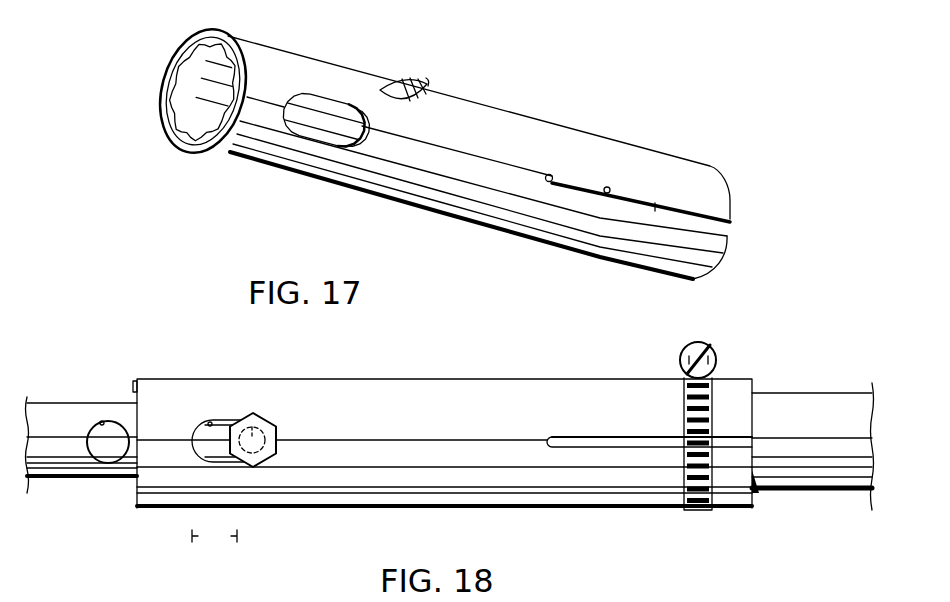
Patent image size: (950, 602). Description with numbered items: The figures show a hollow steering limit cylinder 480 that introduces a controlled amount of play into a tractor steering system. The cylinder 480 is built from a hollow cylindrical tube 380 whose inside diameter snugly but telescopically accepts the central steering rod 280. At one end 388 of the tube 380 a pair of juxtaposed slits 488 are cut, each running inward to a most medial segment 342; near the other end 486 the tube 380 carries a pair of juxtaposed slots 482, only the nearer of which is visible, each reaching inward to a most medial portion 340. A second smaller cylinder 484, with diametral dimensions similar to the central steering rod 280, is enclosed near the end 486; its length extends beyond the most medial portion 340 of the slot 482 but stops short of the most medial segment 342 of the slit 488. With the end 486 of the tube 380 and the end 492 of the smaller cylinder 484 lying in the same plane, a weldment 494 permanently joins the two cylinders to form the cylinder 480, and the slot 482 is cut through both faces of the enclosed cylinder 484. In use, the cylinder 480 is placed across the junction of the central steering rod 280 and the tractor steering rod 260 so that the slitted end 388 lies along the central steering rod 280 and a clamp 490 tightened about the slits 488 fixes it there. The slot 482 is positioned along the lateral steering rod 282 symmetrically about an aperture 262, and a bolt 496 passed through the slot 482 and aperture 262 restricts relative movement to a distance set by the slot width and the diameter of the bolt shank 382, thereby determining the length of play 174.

In FIG. 18, the length of play 174 is at (214, 537).
In FIG. 18, the tractor steering rod 260 is at (93, 490).
In FIG. 18, the aperture 262 is at (102, 421).
In FIG. 18, the central steering rod 280 is at (792, 392).
In FIG. 18, the lateral steering rod 282 is at (50, 427).
In FIG. 17, the most medial portion of slot 340 is at (346, 136).
In FIG. 17, the most medial segment of slit 342 is at (547, 183).
In FIG. 18, the most medial segment of slit 342 is at (551, 437).
In FIG. 17, the hollow cylindrical tube 380 is at (420, 184).
In FIG. 18, the hollow cylindrical tube 380 is at (471, 478).
In FIG. 18, the bolt shank 382 is at (255, 468).
In FIG. 17, the slitted end 388 is at (733, 197).
In FIG. 18, the slitted end 388 is at (757, 507).
In FIG. 17, the hollow steering limit cylinder 480 is at (526, 106).
In FIG. 18, the hollow steering limit cylinder 480 is at (406, 372).
In FIG. 17, the slot 482 is at (350, 100).
In FIG. 18, the slot 482 is at (210, 422).
In FIG. 17, the second smaller cylinder 484 is at (381, 89).
In FIG. 17, the end of tube 486 is at (198, 36).
In FIG. 18, the end of tube 486 is at (137, 383).
In FIG. 17, the slit 488 is at (607, 186).
In FIG. 18, the slit 488 is at (568, 441).
In FIG. 18, the clamp 490 is at (708, 430).
In FIG. 17, the end of smaller cylinder 492 is at (170, 104).
In FIG. 17, the weldment 494 is at (228, 50).
In FIG. 18, the bolt 496 is at (257, 415).